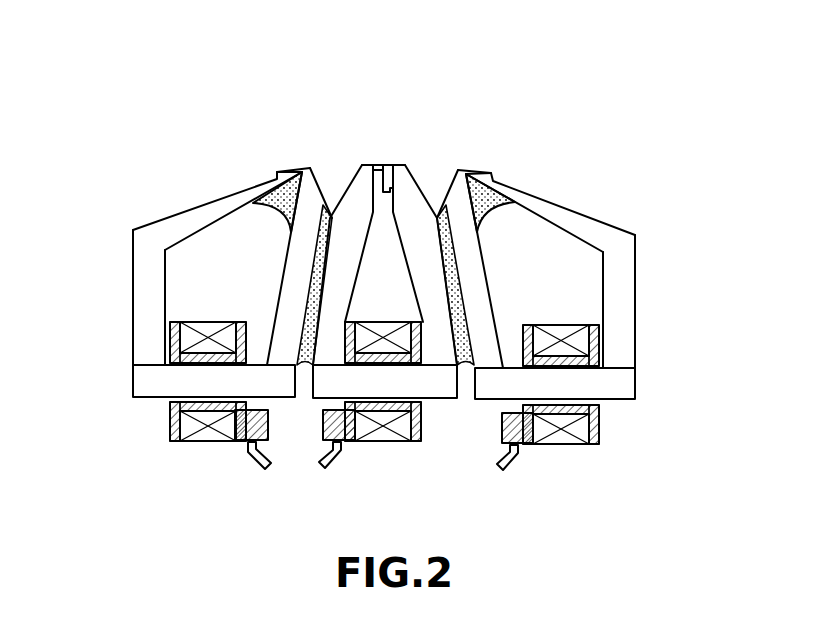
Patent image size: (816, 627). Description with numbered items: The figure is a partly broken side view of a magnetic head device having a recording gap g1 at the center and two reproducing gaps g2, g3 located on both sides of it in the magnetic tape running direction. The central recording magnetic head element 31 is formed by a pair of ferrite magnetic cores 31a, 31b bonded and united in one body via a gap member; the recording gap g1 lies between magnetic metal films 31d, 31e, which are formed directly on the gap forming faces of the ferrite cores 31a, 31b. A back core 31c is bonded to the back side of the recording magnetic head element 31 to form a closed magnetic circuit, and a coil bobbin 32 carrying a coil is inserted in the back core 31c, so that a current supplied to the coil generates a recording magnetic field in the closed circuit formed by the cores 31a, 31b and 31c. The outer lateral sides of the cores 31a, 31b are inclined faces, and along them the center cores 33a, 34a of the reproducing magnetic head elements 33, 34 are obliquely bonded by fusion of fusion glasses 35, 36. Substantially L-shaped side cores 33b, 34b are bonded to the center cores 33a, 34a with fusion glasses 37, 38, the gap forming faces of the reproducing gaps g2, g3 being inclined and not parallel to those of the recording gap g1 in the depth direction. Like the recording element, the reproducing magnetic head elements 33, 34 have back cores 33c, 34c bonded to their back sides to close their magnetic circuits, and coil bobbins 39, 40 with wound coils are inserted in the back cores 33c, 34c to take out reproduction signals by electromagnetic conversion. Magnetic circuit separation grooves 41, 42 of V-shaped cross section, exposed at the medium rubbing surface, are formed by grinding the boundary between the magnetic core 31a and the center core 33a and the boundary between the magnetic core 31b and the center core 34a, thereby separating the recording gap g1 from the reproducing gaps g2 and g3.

The recording magnetic head element 31 is at (406, 278).
The magnetic core 31a is at (350, 182).
The magnetic core 31b is at (415, 180).
The back core 31c is at (438, 400).
The magnetic metal film 31d is at (372, 165).
The magnetic metal film 31e is at (397, 166).
The coil bobbin 32 is at (347, 450).
The reproducing magnetic head element 33 is at (196, 328).
The center core 33a is at (295, 243).
The side core 33b is at (145, 300).
The back core 33c is at (140, 379).
The reproducing magnetic head element 34 is at (570, 323).
The center core 34a is at (478, 253).
The side core 34b is at (630, 303).
The back core 34c is at (625, 388).
The fusion glass 35 is at (310, 292).
The fusion glass 36 is at (458, 280).
The fusion glass 37 is at (253, 203).
The fusion glass 38 is at (508, 218).
The coil bobbin 39 is at (243, 443).
The coil bobbin 40 is at (525, 445).
The magnetic circuit separation groove 41 is at (321, 205).
The magnetic circuit separation groove 42 is at (445, 180).
The recording gap g1 is at (386, 166).
The reproducing gap g2 is at (312, 167).
The reproducing gap g3 is at (472, 175).